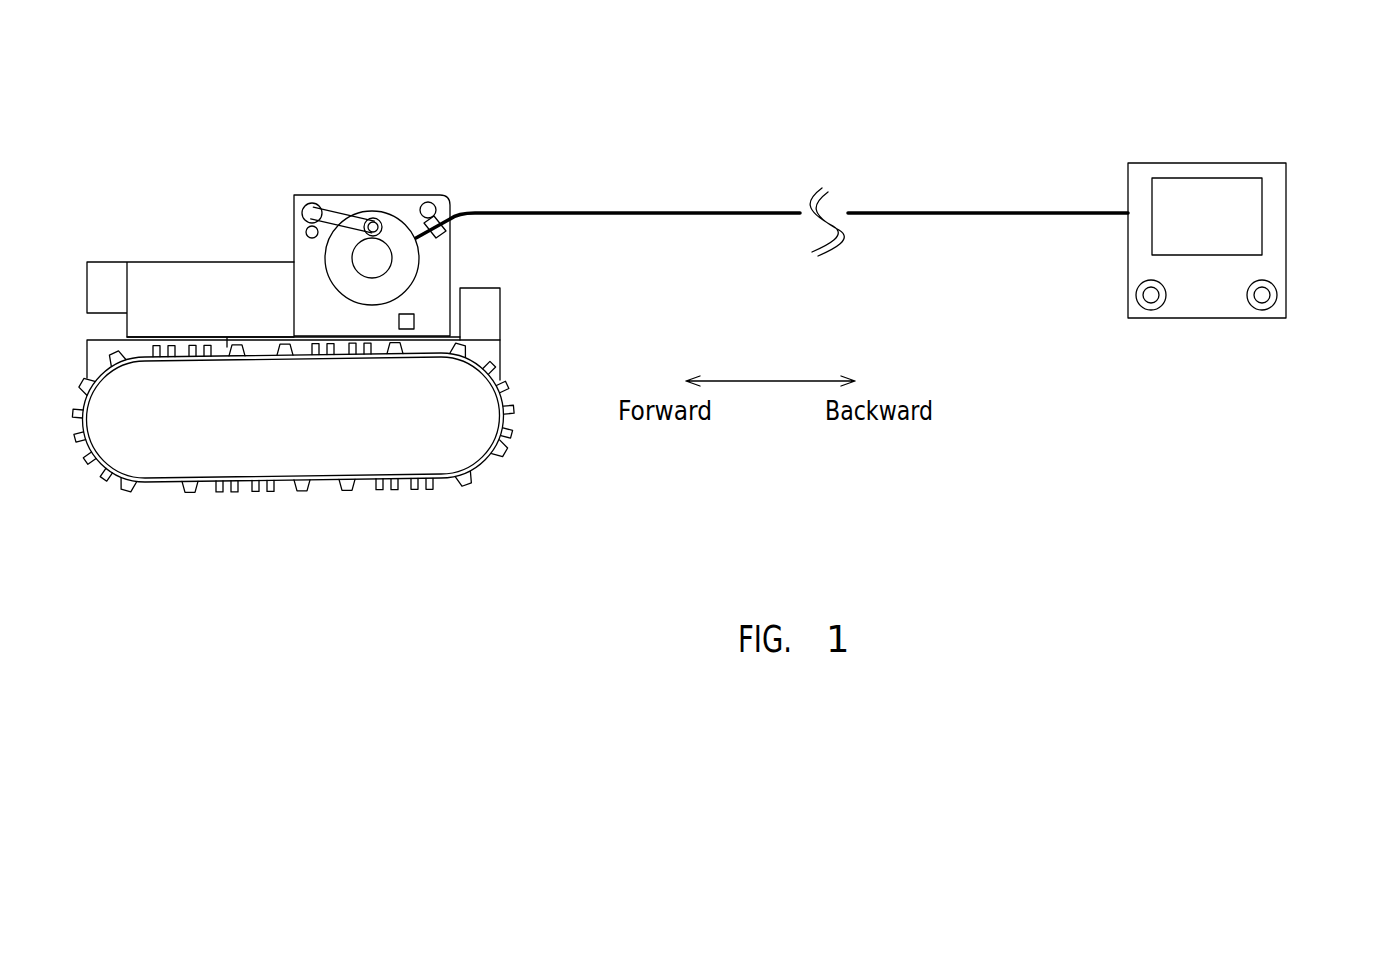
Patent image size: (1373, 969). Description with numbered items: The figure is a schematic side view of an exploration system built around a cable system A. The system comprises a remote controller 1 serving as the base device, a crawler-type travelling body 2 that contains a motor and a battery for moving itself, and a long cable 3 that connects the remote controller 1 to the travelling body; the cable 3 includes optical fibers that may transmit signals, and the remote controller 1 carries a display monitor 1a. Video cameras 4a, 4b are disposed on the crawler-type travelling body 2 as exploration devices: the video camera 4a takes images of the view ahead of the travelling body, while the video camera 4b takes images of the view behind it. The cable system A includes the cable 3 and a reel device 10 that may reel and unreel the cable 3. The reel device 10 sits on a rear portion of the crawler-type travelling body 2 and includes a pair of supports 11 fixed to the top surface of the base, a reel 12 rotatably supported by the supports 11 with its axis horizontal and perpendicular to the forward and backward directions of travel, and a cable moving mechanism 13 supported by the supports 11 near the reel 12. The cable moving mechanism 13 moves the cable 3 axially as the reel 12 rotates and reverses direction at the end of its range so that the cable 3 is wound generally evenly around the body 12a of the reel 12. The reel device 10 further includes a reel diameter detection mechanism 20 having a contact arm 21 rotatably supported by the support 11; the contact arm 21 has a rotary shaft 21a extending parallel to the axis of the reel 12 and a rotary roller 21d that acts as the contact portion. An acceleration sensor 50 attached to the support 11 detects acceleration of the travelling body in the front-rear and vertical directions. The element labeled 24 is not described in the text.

The remote controller 1 is at (1208, 162).
The display monitor 1a is at (1223, 222).
The crawler-type travelling body 2 is at (321, 448).
The cable 3 is at (750, 212).
The video camera 4a is at (112, 262).
The video camera 4b is at (500, 312).
The reel device 10 is at (356, 183).
The support 11 is at (313, 195).
The reel 12 is at (431, 274).
The body of the reel 12a is at (393, 257).
The cable moving mechanism 13 is at (414, 196).
The reel diameter detection mechanism 20 is at (331, 196).
The contact arm 21 is at (371, 205).
The rotary shaft 21a is at (304, 208).
The rotary roller 21d is at (392, 198).
The stopper pin 24 is at (306, 230).
The acceleration sensor 50 is at (414, 321).
The cable system A is at (626, 203).